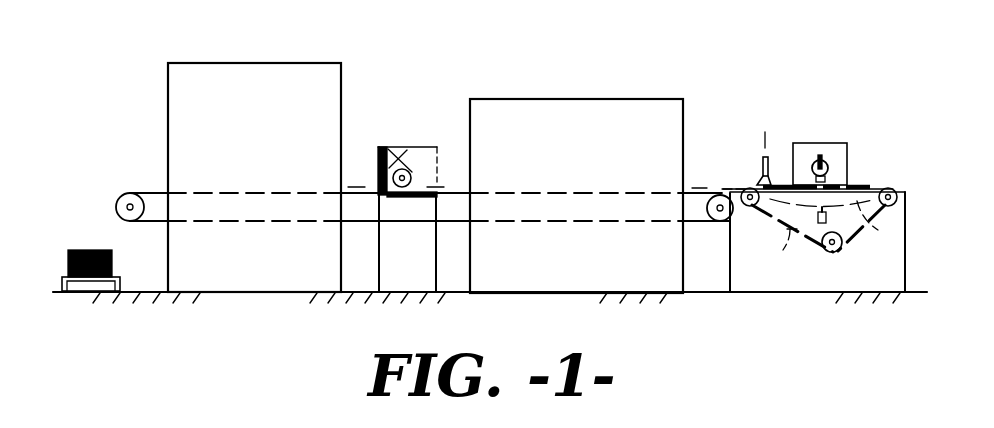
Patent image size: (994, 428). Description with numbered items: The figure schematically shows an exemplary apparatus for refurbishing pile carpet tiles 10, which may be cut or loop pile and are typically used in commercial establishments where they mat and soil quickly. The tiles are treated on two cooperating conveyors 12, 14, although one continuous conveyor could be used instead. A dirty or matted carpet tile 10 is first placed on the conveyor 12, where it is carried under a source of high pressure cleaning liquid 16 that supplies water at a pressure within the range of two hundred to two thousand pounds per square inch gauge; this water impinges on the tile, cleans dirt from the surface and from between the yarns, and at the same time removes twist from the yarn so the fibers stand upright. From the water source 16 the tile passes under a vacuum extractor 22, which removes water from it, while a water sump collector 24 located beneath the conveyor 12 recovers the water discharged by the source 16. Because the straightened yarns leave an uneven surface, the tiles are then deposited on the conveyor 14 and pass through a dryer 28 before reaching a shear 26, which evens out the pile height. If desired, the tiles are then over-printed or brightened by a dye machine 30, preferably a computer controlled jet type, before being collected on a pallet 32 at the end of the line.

The carpet tile 10 is at (853, 178).
The conveyor 12 is at (786, 251).
The conveyor 14 is at (498, 193).
The source of high pressure cleaning liquid 16 is at (845, 162).
The vacuum extractor 22 is at (758, 170).
The water sump collector 24 is at (897, 232).
The shear 26 is at (413, 168).
The dryer 28 is at (585, 99).
The dye machine 30 is at (262, 63).
The pallet 32 is at (122, 288).